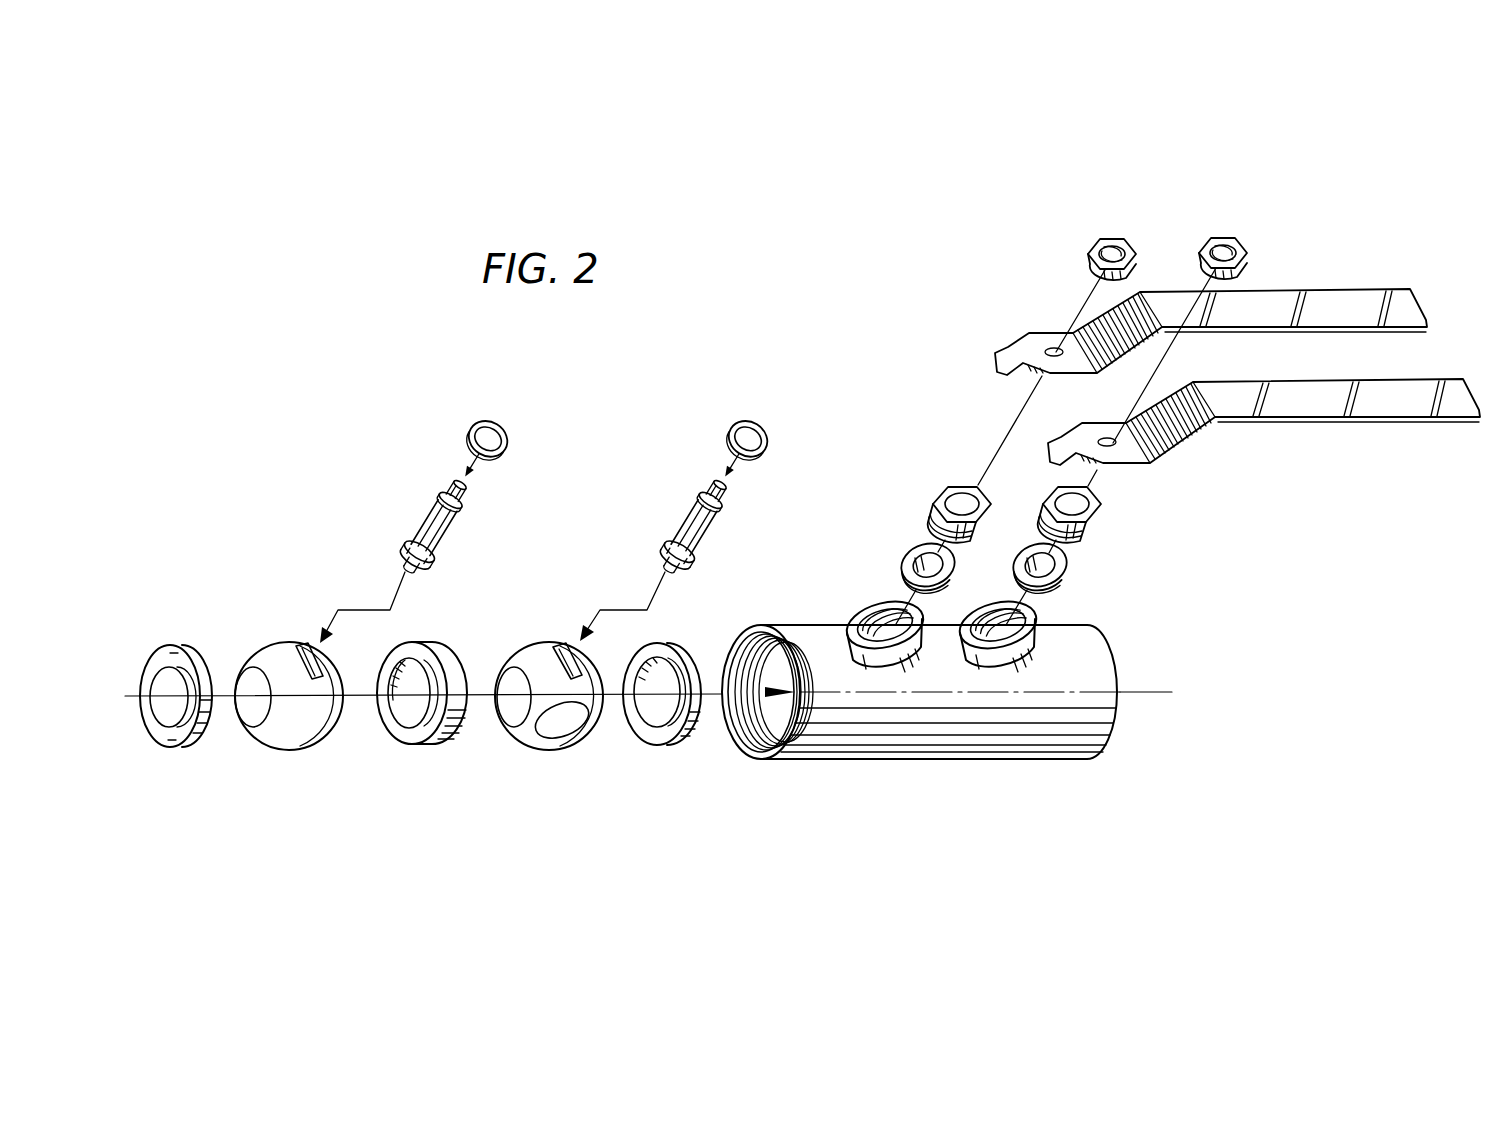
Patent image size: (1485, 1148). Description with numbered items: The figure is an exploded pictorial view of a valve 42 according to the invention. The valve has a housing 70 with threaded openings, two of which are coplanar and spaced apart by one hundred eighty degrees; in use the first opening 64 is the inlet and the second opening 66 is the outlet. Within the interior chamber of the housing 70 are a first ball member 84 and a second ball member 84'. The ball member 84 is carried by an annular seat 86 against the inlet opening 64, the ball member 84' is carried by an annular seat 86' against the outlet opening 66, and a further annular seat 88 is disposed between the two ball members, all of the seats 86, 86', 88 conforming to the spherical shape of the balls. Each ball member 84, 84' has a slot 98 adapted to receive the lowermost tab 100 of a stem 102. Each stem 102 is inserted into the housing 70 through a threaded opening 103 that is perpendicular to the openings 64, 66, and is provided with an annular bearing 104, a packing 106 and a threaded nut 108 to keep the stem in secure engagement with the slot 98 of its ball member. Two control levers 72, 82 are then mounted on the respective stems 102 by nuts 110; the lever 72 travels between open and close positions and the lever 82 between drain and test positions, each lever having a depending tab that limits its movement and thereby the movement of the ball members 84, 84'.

The valve 42 is at (1068, 767).
The first opening 64 is at (1166, 693).
The second opening 66 is at (758, 722).
The housing 70 is at (965, 708).
The control lever 72 is at (1367, 291).
The control lever 82 is at (1430, 381).
The first ball member 84 is at (549, 735).
The second ball member 84' is at (289, 735).
The annular seat 86 is at (662, 735).
The annular seat 86' is at (176, 659).
The annular seat 88 is at (428, 746).
The slot 98 is at (301, 644).
The lowermost tab 100 is at (430, 573).
The stem 102 is at (468, 527).
The threaded opening 103 is at (873, 612).
The annular bearing 104 is at (509, 437).
The packing 106 is at (903, 560).
The threaded nut 108 is at (931, 505).
The nut 110 is at (1130, 243).